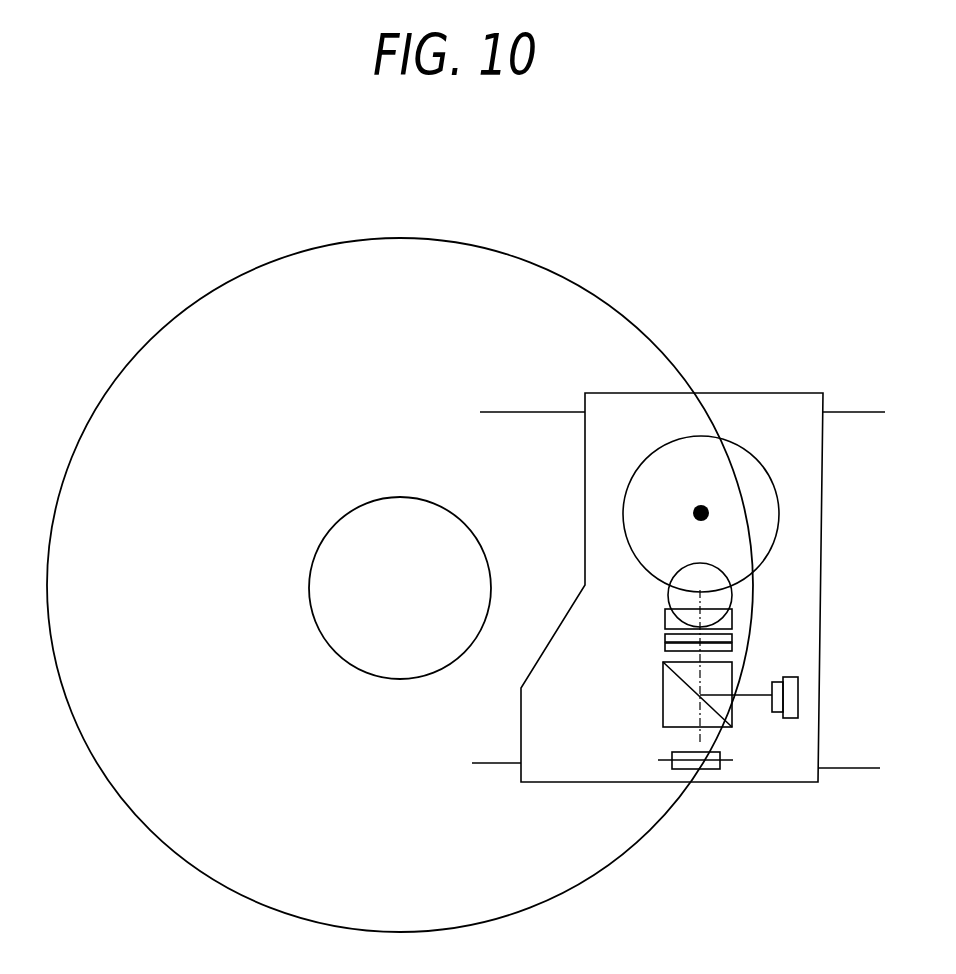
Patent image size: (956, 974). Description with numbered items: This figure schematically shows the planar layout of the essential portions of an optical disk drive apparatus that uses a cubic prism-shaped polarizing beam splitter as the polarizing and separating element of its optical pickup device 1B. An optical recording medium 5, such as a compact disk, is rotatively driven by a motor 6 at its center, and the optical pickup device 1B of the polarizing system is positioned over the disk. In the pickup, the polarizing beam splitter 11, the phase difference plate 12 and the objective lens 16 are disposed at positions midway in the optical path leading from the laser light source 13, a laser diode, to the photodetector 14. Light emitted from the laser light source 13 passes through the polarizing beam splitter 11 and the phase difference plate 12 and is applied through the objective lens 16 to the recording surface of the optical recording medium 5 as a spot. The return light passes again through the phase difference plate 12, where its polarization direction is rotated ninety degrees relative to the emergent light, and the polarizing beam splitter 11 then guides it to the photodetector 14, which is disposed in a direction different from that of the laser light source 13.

The optical pickup device 1B is at (146, 228).
The optical recording medium 5 is at (153, 335).
The motor 6 is at (323, 545).
The polarizing beam splitter 11 is at (663, 675).
The phase difference plate 12 is at (735, 643).
The laser light source 13 is at (786, 704).
The photodetector 14 is at (720, 766).
The objective lens 16 is at (733, 622).